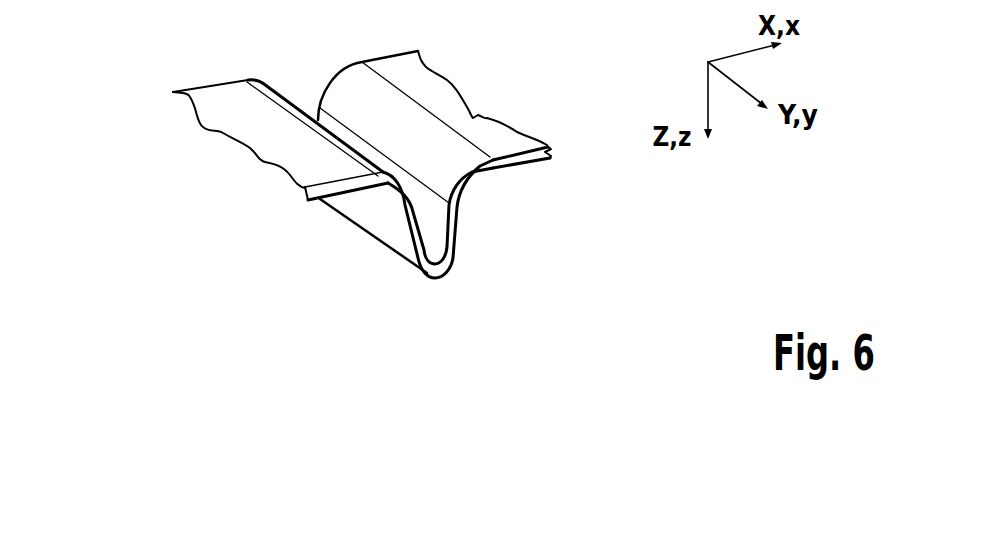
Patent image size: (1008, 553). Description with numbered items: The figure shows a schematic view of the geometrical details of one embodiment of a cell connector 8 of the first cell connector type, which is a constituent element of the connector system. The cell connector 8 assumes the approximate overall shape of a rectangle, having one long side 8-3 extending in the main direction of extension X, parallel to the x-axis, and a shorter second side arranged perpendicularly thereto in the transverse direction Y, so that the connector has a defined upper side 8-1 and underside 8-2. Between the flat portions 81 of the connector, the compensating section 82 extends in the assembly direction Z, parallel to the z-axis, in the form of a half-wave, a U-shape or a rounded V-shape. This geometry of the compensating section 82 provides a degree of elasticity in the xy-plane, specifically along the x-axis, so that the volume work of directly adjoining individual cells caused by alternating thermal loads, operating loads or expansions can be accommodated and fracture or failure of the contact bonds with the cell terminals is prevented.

The cell connector 8 is at (353, 183).
The upper side 8-1 is at (479, 109).
The underside 8-2 is at (527, 178).
The long side 8-3 is at (203, 85).
The flat sections 81 is at (400, 303).
The compensating section 82 is at (495, 279).